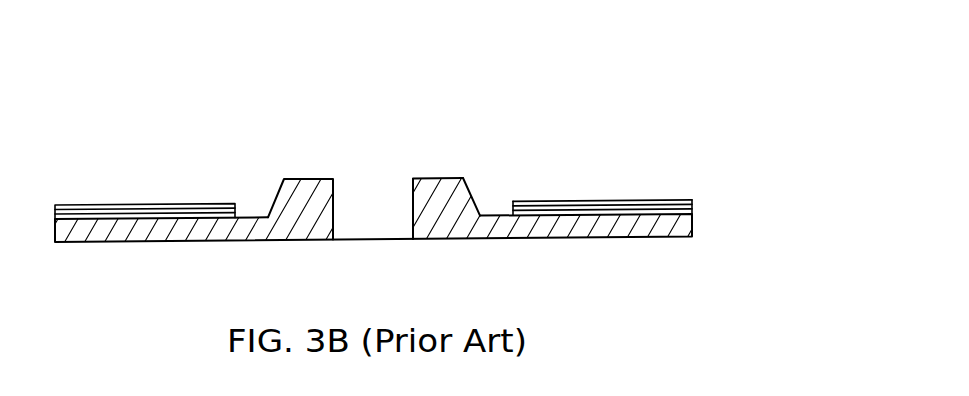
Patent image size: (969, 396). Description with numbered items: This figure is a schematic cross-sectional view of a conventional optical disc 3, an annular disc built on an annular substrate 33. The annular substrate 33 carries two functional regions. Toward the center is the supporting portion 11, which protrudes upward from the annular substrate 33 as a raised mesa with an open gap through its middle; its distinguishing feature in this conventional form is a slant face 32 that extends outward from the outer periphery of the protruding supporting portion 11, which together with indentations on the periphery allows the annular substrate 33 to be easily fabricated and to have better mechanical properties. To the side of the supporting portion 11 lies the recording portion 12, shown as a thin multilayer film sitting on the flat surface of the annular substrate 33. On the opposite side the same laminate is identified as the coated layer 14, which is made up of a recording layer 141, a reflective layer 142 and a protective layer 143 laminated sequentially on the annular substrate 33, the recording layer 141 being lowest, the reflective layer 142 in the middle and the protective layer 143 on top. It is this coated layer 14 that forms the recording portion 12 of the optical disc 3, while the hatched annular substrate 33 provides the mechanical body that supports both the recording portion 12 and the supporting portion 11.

The optical disc 3 is at (30, 101).
The supporting portion 11 is at (283, 163).
The recording portion 12 is at (55, 175).
The slant face 32 is at (469, 190).
The annular substrate 33 is at (595, 229).
The coated layer 14 is at (669, 208).
The recording layer 141 is at (639, 228).
The reflective layer 142 is at (692, 204).
The protective layer 143 is at (692, 200).